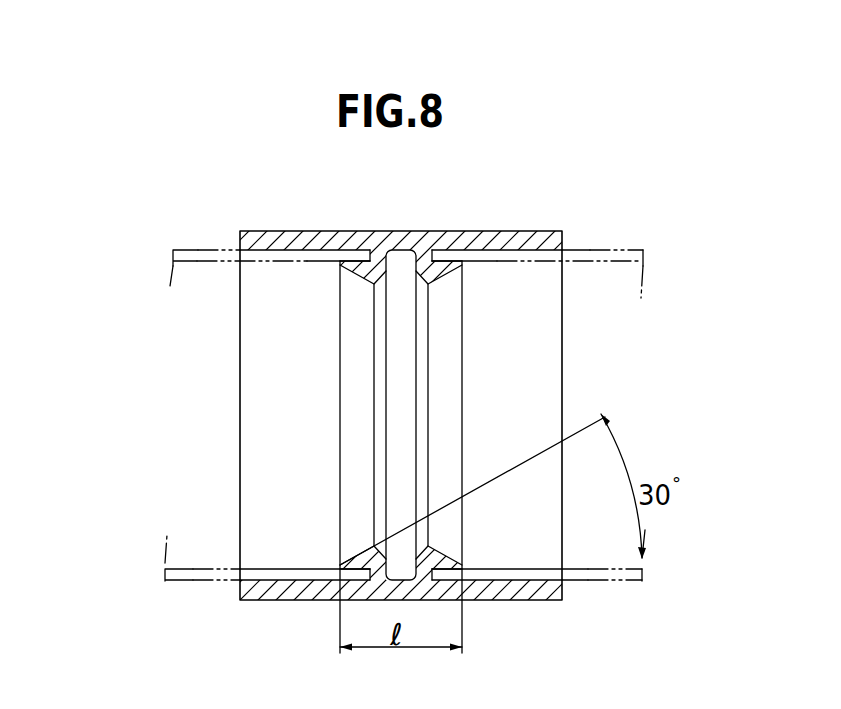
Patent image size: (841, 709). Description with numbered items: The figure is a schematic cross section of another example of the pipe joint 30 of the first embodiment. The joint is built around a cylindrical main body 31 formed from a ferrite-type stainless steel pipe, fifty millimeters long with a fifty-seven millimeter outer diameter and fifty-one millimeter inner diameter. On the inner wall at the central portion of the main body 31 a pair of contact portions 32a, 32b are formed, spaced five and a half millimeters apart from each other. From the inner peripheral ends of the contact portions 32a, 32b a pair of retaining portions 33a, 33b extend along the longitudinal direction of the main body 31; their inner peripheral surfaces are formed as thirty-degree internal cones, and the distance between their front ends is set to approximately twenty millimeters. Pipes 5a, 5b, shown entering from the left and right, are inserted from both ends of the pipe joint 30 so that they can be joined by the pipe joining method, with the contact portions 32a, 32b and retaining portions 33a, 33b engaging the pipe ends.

The pipe joint 30 is at (627, 201).
The cylindrical main body 31 is at (495, 231).
The contact portion 32a is at (427, 260).
The contact portion 32b is at (380, 262).
The retaining portion 33a is at (442, 267).
The retaining portion 33b is at (365, 268).
The pipe 5a is at (632, 583).
The pipe 5b is at (189, 251).